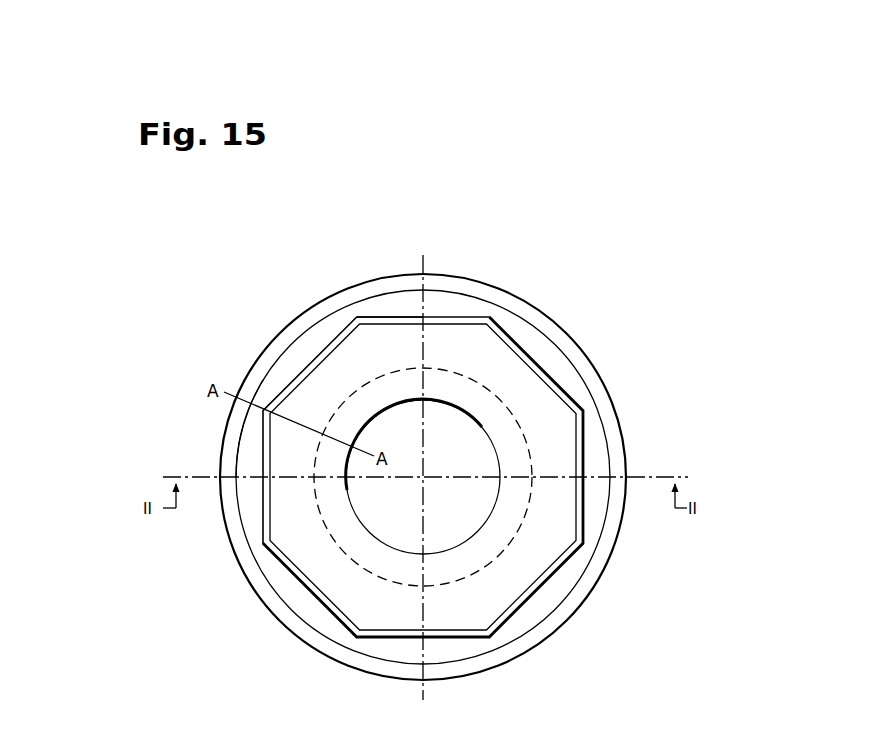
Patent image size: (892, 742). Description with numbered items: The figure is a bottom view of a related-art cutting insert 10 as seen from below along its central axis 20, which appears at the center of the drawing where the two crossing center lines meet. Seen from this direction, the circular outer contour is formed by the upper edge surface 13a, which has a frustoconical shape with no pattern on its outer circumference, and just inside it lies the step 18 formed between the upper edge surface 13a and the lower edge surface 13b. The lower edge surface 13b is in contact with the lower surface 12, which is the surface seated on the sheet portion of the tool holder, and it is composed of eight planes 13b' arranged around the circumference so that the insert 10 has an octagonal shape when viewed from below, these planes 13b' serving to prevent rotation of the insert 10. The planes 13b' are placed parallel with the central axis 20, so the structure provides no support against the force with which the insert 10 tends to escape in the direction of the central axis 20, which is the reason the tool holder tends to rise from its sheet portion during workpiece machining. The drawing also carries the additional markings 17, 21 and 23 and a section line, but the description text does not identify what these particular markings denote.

The insert 10 is at (577, 322).
The lower surface 12 is at (543, 402).
The upper edge surface 13a is at (612, 412).
The lower edge surface 13b is at (446, 484).
The planes 13b' is at (465, 477).
The groove 17 is at (492, 456).
The step 18 is at (250, 434).
The central axis 20 is at (420, 479).
The edge portion 21 is at (296, 577).
The corner portion 23 is at (362, 315).